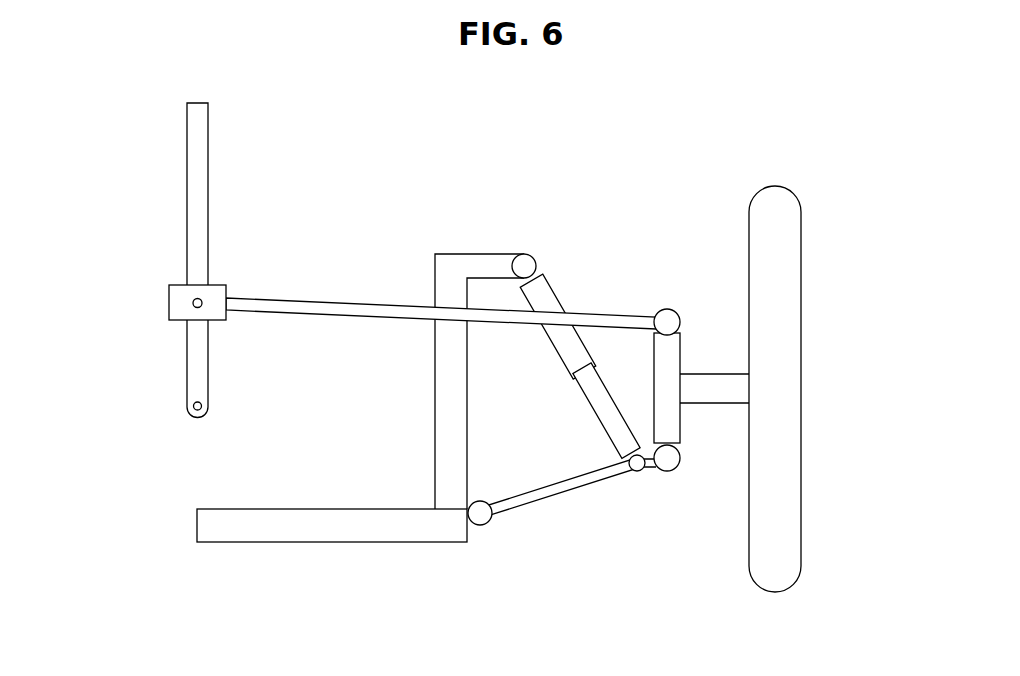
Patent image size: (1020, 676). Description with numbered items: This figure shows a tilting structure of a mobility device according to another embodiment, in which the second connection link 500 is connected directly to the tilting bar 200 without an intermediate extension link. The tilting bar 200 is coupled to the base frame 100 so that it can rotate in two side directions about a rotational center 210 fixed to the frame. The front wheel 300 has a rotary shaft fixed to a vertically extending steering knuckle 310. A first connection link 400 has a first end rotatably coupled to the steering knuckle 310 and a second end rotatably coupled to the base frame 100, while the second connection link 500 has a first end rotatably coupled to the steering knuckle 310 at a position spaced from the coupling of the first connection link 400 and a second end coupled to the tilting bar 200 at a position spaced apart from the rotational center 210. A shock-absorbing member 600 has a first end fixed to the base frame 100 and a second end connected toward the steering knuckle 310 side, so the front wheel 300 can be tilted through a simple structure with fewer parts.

The base frame 100 is at (330, 537).
The tilting bar 200 is at (193, 143).
The rotational center 210 is at (187, 408).
The front wheel 300 is at (790, 304).
The steering knuckle 310 is at (668, 422).
The first connection link 400 is at (560, 487).
The second connection link 500 is at (312, 298).
The shock-absorbing member 600 is at (553, 293).